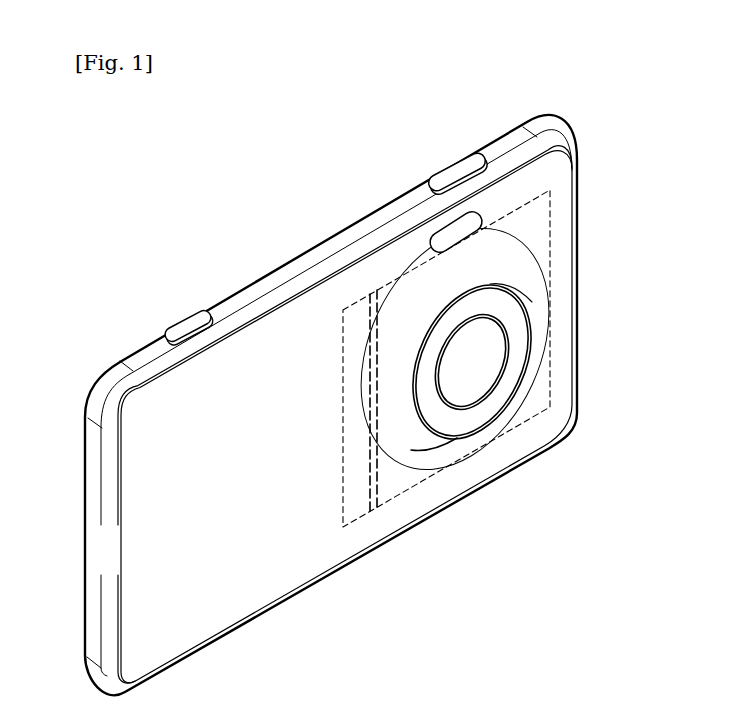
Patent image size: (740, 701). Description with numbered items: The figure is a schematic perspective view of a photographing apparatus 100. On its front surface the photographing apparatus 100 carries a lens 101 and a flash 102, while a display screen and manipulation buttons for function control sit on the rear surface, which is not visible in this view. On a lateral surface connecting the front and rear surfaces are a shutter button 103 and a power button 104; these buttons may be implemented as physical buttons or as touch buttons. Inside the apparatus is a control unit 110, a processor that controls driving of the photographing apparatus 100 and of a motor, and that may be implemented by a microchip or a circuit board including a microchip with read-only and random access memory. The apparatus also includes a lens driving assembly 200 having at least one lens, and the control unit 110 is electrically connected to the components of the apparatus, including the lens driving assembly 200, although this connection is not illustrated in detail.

The photographing apparatus 100 is at (328, 172).
The lens 101 is at (465, 383).
The flash 102 is at (462, 230).
The shutter button 103 is at (183, 323).
The power button 104 is at (460, 172).
The control unit 110 is at (362, 517).
The lens driving assembly 200 is at (523, 420).